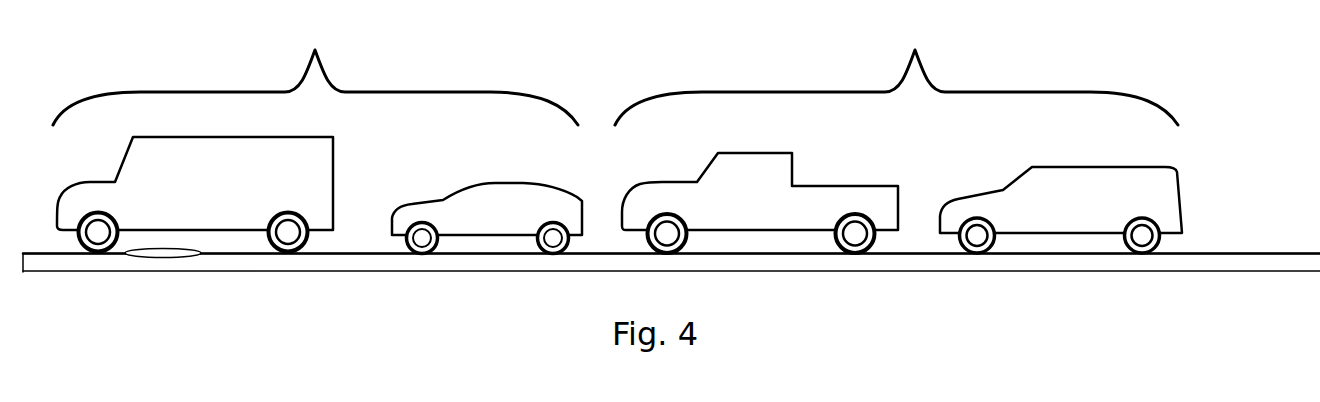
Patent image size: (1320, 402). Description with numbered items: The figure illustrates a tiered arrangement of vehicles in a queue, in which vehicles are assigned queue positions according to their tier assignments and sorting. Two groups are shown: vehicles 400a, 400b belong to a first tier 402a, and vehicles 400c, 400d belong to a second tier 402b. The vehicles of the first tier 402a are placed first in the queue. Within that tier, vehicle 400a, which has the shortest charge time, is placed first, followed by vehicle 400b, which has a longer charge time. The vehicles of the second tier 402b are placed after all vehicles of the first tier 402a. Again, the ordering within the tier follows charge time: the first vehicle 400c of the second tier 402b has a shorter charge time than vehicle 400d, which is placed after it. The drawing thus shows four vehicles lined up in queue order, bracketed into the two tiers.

The vehicle 400a is at (222, 196).
The vehicle 400b is at (459, 221).
The vehicle 400c is at (733, 205).
The vehicle 400d is at (1032, 213).
The first tier 402a is at (315, 72).
The second tier 402b is at (896, 72).